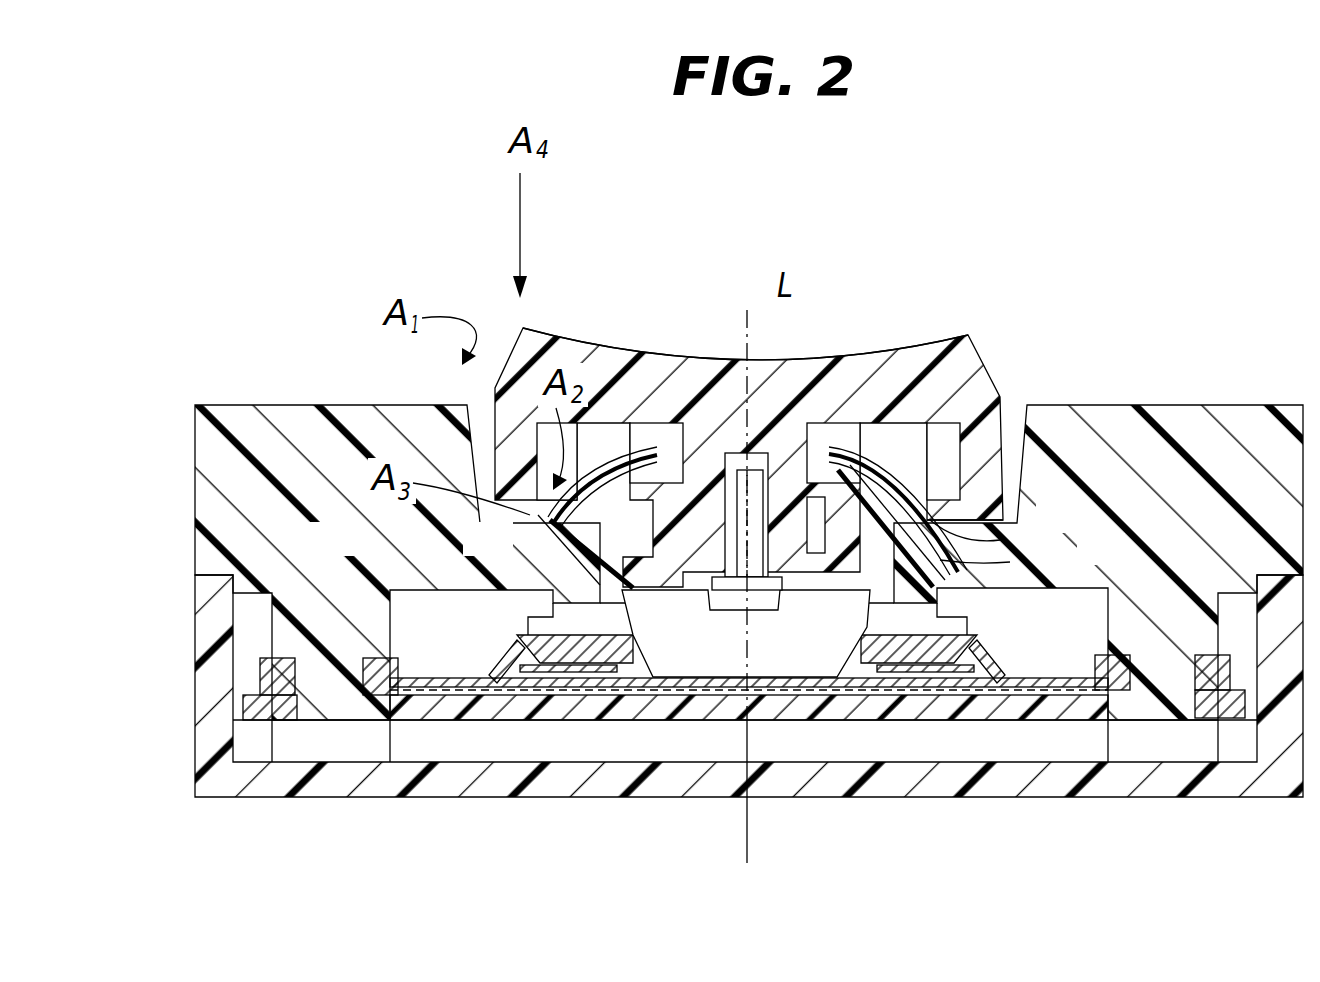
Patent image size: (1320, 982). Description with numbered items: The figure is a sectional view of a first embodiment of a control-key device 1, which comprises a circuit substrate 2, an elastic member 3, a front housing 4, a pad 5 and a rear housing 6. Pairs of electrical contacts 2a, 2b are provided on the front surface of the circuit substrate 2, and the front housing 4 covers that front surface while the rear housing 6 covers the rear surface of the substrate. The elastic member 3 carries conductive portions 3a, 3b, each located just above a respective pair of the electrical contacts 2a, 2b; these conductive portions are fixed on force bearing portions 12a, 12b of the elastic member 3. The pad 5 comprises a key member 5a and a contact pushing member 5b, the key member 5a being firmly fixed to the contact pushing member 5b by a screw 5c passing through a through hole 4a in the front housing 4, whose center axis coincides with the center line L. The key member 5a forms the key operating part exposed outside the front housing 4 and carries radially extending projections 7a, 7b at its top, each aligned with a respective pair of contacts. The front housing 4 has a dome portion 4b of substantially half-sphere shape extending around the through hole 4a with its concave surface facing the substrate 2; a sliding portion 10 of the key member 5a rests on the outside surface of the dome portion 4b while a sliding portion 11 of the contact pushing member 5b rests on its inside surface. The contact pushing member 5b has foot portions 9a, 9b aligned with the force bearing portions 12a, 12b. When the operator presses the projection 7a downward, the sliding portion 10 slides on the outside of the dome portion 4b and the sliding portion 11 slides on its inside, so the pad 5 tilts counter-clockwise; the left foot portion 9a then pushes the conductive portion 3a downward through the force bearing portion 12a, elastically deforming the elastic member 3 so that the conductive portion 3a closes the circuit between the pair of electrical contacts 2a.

The control-key device 1 is at (1053, 250).
The circuit substrate 2 is at (1020, 705).
The pair of electrical contacts 2a is at (588, 690).
The pair of electrical contacts 2b is at (940, 690).
The elastic member 3 is at (823, 705).
The conductive portion 3a is at (490, 662).
The conductive portion 3b is at (1000, 655).
The front housing 4 is at (1198, 422).
The through hole 4a is at (665, 450).
The dome portion 4b is at (937, 467).
The pad 5 is at (775, 398).
The key member 5a is at (665, 390).
The contact pushing member 5b is at (648, 593).
The screw 5c is at (768, 612).
The rear housing 6 is at (440, 790).
The projection 7a is at (560, 340).
The projection 7b is at (948, 336).
The foot portion 9a is at (548, 572).
The foot portion 9b is at (1030, 565).
The sliding portion 10 is at (893, 447).
The sliding portion 11 is at (1003, 540).
The force bearing portion 12a is at (417, 560).
The force bearing portion 12b is at (977, 628).